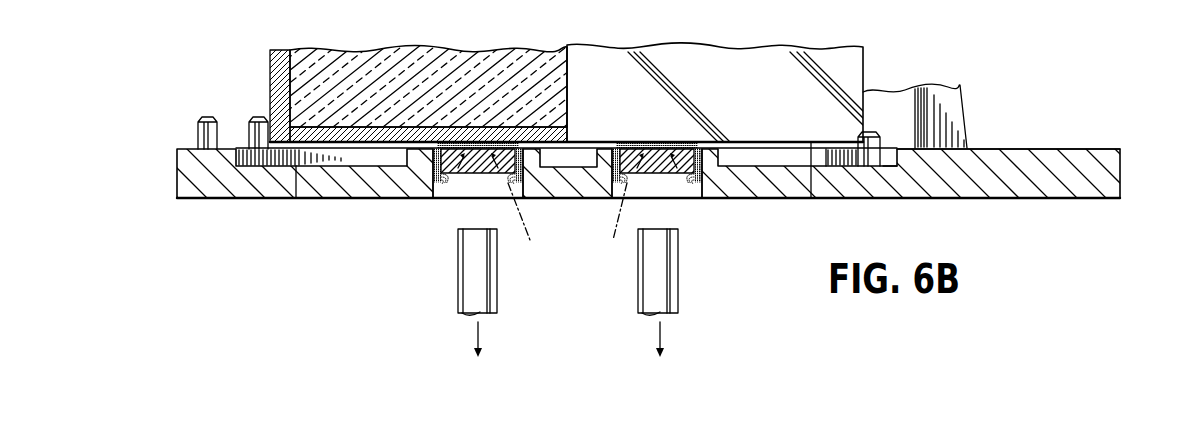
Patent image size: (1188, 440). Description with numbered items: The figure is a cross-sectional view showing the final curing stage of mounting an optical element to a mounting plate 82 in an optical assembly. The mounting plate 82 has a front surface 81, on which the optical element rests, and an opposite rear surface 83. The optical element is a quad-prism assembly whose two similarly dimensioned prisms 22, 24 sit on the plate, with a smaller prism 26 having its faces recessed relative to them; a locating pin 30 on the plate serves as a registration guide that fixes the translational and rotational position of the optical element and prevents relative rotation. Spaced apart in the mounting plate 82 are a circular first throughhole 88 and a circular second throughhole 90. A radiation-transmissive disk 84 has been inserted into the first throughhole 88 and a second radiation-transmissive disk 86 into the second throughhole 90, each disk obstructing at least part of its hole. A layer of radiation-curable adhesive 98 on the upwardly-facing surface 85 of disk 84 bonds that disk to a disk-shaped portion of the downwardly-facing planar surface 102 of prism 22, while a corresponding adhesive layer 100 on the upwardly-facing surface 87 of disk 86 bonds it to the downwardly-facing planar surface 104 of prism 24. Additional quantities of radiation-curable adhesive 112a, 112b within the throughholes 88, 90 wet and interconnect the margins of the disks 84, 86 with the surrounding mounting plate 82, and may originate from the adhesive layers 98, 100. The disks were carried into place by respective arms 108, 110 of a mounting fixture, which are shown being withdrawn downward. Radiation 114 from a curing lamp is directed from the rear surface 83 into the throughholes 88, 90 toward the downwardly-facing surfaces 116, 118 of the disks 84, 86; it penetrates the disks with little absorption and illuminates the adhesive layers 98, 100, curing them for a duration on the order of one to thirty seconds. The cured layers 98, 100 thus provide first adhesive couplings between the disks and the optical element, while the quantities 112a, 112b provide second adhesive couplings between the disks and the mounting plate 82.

The prism 22 is at (718, 53).
The prism 24 is at (271, 65).
The prism 26 is at (403, 55).
The locating pin 30 is at (882, 136).
The front surface 81 is at (1050, 148).
The mounting plate 82 is at (1121, 149).
The rear surface 83 is at (1047, 199).
The radiation-transmissive disk 84 is at (482, 157).
The upwardly-facing surface 85 is at (463, 142).
The radiation-transmissive disk 86 is at (706, 160).
The upwardly-facing surface 87 is at (687, 142).
The first throughhole 88 is at (459, 175).
The second throughhole 90 is at (663, 176).
The radiation-curable adhesive layer 98 is at (450, 148).
The radiation-curable adhesive layer 100 is at (663, 142).
The downwardly-facing planar surface 102 is at (811, 200).
The downwardly-facing planar surface 104 is at (296, 200).
The arm 108 is at (458, 300).
The arm 110 is at (638, 306).
The quantity of radiation-curable adhesive 112a is at (433, 199).
The quantity of radiation-curable adhesive 112b is at (700, 199).
The radiation 114 is at (613, 240).
The downwardly-facing surface 116 is at (468, 174).
The downwardly-facing surface 118 is at (673, 175).